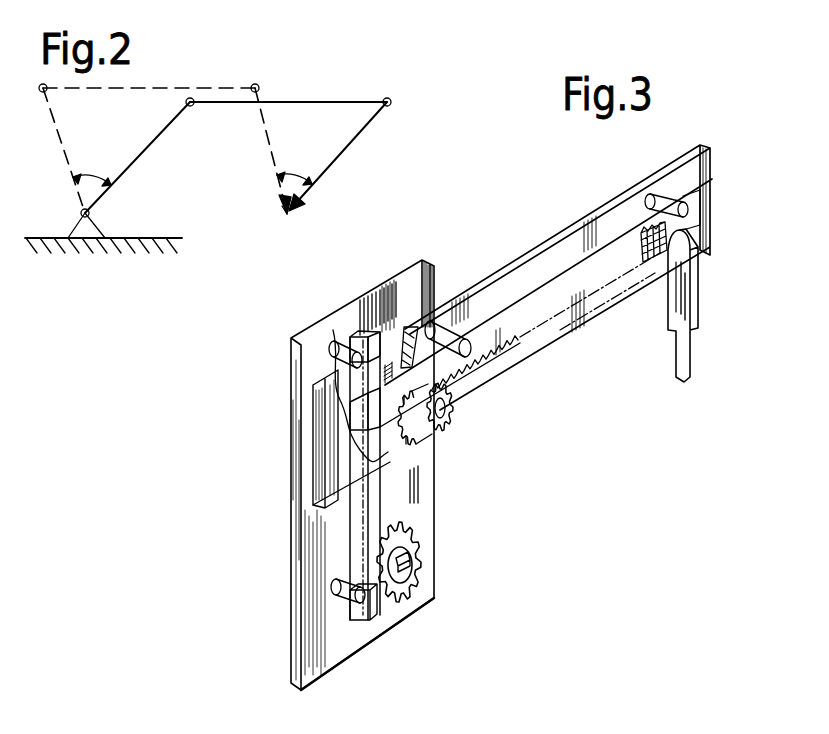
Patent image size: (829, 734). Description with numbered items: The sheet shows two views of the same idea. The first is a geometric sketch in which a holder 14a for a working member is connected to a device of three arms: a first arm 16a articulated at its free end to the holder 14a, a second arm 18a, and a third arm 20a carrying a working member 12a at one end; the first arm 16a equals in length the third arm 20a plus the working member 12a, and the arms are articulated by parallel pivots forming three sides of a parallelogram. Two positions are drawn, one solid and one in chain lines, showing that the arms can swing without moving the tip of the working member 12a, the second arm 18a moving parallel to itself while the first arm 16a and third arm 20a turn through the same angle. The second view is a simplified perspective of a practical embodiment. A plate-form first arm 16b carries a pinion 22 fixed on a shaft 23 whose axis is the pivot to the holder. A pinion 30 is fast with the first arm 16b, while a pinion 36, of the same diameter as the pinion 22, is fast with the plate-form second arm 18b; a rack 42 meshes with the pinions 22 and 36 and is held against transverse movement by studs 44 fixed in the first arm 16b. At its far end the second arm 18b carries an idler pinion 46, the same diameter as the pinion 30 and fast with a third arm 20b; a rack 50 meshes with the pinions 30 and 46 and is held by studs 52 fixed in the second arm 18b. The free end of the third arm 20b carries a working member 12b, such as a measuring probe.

In FIG. 2, the working member 12a is at (293, 208).
In FIG. 2, the holder 14a is at (152, 238).
In FIG. 2, the first arm 16a is at (158, 135).
In FIG. 2, the second arm 18a is at (303, 102).
In FIG. 2, the third arm 20a is at (347, 150).
In FIG. 3, the working member 12b is at (676, 362).
In FIG. 3, the first arm 16b is at (292, 605).
In FIG. 3, the second arm 18b is at (529, 250).
In FIG. 3, the third arm 20b is at (680, 332).
In FIG. 3, the pinion 22 is at (410, 586).
In FIG. 3, the shaft 23 is at (410, 552).
In FIG. 3, the pinion 30 is at (452, 406).
In FIG. 3, the pinion 36 is at (420, 443).
In FIG. 3, the rack 42 is at (360, 530).
In FIG. 3, the studs 44 is at (337, 347).
In FIG. 3, the idler pinion 46 is at (651, 266).
In FIG. 3, the rack 50 is at (609, 253).
In FIG. 3, the studs 52 is at (446, 326).